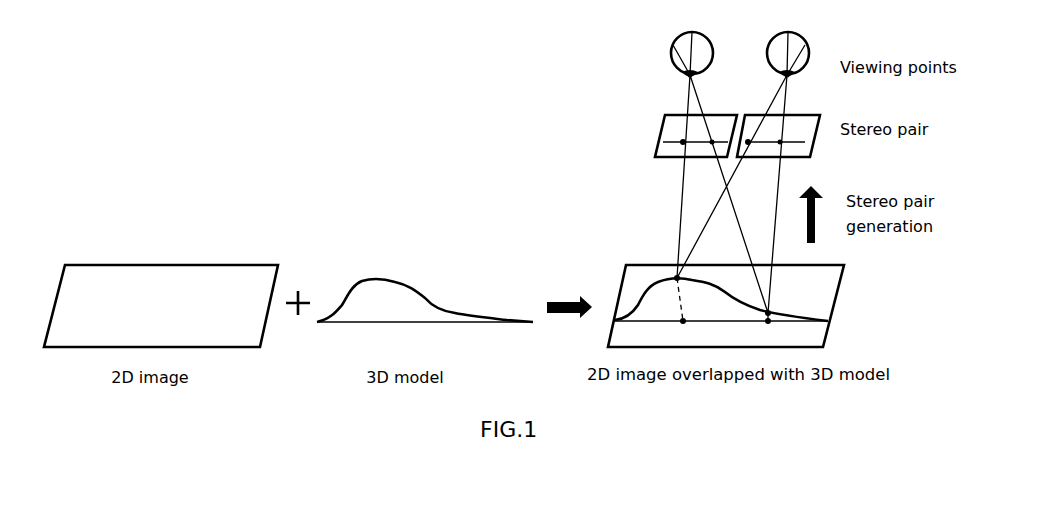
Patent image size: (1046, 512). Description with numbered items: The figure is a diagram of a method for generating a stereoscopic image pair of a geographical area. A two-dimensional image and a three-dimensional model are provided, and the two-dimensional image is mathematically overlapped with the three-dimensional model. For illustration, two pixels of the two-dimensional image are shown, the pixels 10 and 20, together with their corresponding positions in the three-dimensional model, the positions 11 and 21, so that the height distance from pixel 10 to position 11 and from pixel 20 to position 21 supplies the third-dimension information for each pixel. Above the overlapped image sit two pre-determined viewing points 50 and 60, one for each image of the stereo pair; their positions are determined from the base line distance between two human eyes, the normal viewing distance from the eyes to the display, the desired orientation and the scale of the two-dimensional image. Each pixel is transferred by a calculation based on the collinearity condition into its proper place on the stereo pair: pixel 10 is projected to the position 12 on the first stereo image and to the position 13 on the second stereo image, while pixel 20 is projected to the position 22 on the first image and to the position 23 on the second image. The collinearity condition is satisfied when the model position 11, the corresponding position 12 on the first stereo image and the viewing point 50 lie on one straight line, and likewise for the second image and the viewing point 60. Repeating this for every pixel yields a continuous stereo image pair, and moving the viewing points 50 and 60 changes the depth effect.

The pixel of the 2D image 10 is at (675, 326).
The corresponding position in the 3D model 11 is at (675, 277).
The pixel of the 2D image 20 is at (775, 325).
The corresponding position in the 3D model 21 is at (775, 310).
The projected pixel position in the first stereo image 12 is at (680, 145).
The projected pixel position in the second stereo image 23 is at (788, 148).
The projected pixel position in the first stereo image 22 is at (714, 138).
The projected pixel position in the second stereo image 13 is at (749, 138).
The viewing point 50 is at (678, 78).
The viewing point 60 is at (802, 77).